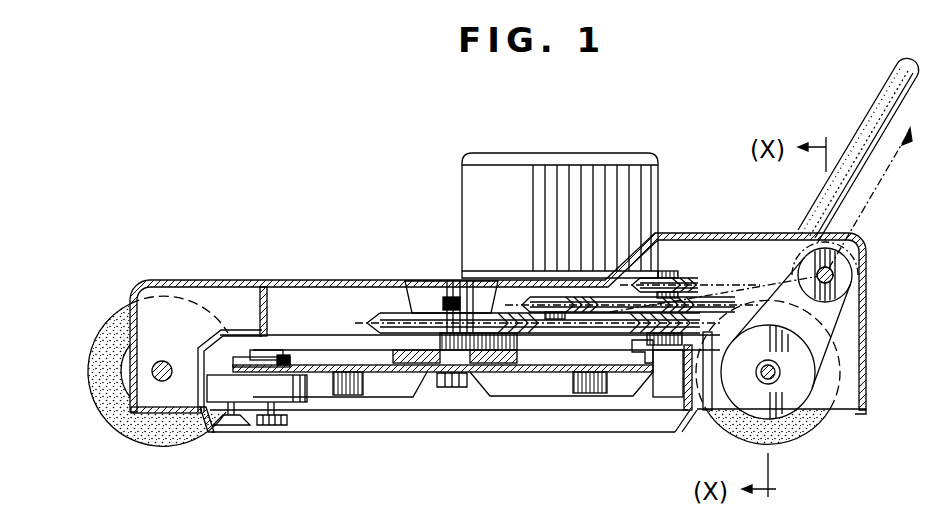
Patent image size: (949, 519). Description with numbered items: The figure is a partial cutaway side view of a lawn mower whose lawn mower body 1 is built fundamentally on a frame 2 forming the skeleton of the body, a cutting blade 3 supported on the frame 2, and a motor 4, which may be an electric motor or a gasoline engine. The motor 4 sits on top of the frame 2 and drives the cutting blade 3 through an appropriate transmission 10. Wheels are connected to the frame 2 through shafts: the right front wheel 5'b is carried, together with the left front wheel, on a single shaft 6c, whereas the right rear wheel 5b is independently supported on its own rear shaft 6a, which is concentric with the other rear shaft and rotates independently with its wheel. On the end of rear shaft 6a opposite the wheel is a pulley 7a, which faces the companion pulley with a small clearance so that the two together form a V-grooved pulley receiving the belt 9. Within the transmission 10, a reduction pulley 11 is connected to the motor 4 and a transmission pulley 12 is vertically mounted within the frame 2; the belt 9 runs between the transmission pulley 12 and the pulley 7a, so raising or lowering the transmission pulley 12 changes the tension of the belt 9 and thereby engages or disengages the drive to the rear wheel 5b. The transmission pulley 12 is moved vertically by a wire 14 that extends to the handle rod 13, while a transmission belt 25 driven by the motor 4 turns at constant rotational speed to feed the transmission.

The lawn mower body 1 is at (363, 279).
The frame 2 is at (284, 279).
The cutting blade 3 is at (266, 426).
The motor 4 is at (610, 167).
The right rear wheel 5b is at (813, 423).
The right front wheel 5'b is at (163, 386).
The left rear shaft 6a is at (770, 384).
The front wheel shaft 6c is at (162, 381).
The pulley 7a is at (807, 375).
The belt 9 is at (838, 331).
The transmission 10 is at (646, 272).
The reduction pulley 11 is at (702, 298).
The transmission pulley 12 is at (848, 279).
The handle rod 13 is at (893, 90).
The wire 14 is at (865, 195).
The transmission belt 25 is at (754, 274).